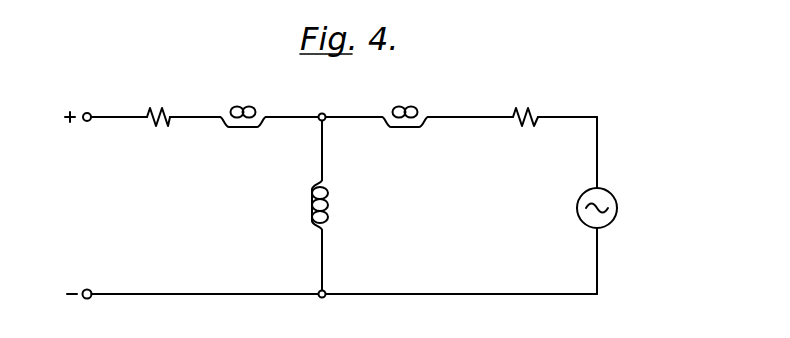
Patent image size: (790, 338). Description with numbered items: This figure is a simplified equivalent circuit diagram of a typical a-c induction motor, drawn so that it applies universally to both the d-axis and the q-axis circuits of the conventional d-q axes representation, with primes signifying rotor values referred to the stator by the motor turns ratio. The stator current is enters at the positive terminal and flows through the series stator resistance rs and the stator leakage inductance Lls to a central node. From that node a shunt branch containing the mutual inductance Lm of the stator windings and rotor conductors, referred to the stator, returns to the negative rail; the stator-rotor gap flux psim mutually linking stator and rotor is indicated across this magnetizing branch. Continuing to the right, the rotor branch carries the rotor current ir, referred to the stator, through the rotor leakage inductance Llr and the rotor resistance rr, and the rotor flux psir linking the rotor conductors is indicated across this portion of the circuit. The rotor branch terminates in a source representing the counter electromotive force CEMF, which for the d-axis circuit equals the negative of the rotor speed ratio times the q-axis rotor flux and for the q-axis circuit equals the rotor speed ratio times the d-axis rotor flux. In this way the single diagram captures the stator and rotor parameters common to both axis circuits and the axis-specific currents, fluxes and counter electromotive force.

The stator resistance rs is at (158, 134).
The stator leakage inductance Lls is at (243, 134).
The rotor leakage inductance Llr is at (405, 134).
The rotor resistance rr is at (525, 135).
The mutual inductance Lm is at (338, 205).
The counter electromotive force CEMF is at (599, 119).
The stator current is is at (148, 96).
The rotor current ir is at (592, 98).
The stator-rotor gap flux psim is at (320, 119).
The rotor flux psir is at (468, 118).